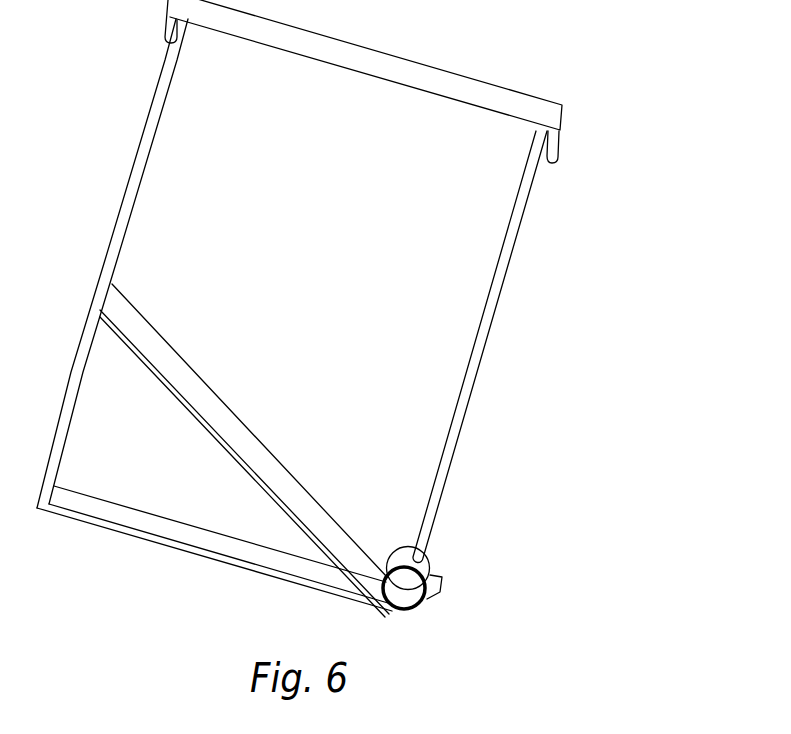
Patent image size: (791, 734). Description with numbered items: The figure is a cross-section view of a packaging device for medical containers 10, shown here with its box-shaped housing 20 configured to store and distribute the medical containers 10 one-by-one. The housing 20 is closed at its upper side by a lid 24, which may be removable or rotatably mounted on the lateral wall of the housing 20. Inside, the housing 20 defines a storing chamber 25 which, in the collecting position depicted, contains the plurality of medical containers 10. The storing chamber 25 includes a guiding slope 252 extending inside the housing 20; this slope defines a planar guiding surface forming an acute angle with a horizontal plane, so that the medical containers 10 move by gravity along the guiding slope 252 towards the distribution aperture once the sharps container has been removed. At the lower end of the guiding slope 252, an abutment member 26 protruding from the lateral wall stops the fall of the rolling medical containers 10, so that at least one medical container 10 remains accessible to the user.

The medical container 10 is at (420, 568).
The housing 20 is at (496, 302).
The lid 24 is at (393, 54).
The storing chamber 25 is at (325, 238).
The guiding slope 252 is at (246, 440).
The abutment member 26 is at (438, 597).